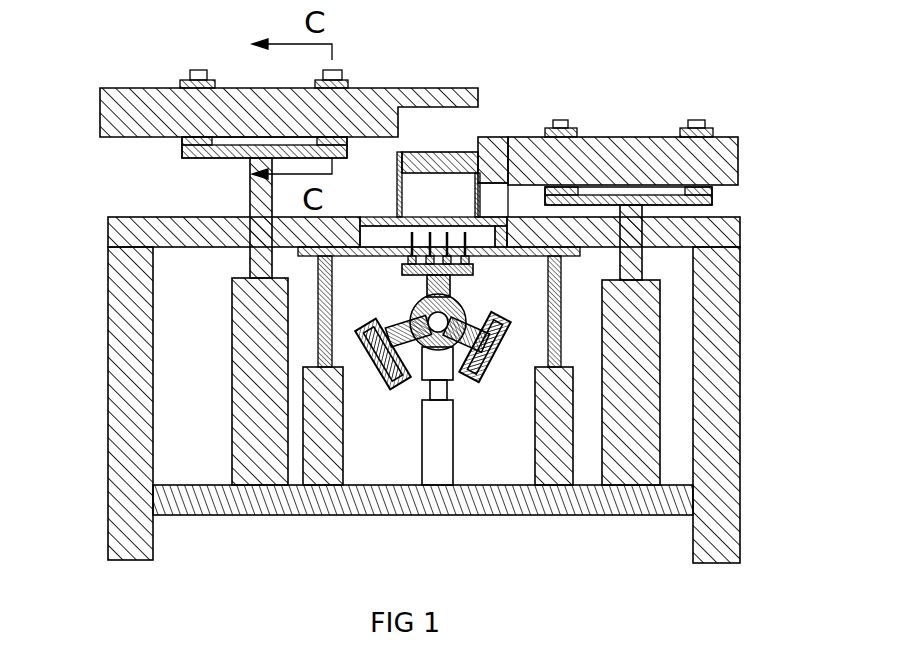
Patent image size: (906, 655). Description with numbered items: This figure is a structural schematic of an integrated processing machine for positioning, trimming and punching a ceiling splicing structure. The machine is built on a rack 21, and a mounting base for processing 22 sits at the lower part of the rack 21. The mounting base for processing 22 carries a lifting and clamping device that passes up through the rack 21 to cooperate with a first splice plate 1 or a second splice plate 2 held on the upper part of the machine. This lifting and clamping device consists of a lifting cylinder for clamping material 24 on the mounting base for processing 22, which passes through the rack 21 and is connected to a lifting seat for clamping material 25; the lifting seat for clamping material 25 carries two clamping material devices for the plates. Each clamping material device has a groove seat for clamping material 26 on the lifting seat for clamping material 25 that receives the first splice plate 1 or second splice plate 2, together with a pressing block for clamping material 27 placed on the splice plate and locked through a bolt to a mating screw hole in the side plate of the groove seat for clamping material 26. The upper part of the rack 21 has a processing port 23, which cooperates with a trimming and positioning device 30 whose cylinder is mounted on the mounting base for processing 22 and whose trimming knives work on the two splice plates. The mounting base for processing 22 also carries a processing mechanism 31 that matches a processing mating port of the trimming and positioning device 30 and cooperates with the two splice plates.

The first splice plate 1 is at (130, 120).
The second splice plate 2 is at (728, 141).
The rack 21 is at (718, 468).
The mounting base for processing 22 is at (205, 497).
The processing port 23 is at (368, 235).
The lifting cylinder for clamping material 24 is at (263, 398).
The lifting seat for clamping material 25 is at (598, 200).
The groove seat for clamping material 26 is at (193, 147).
The pressing block for clamping material 27 is at (557, 127).
The trimming and positioning device 30 is at (497, 217).
The processing mechanism 31 is at (436, 368).